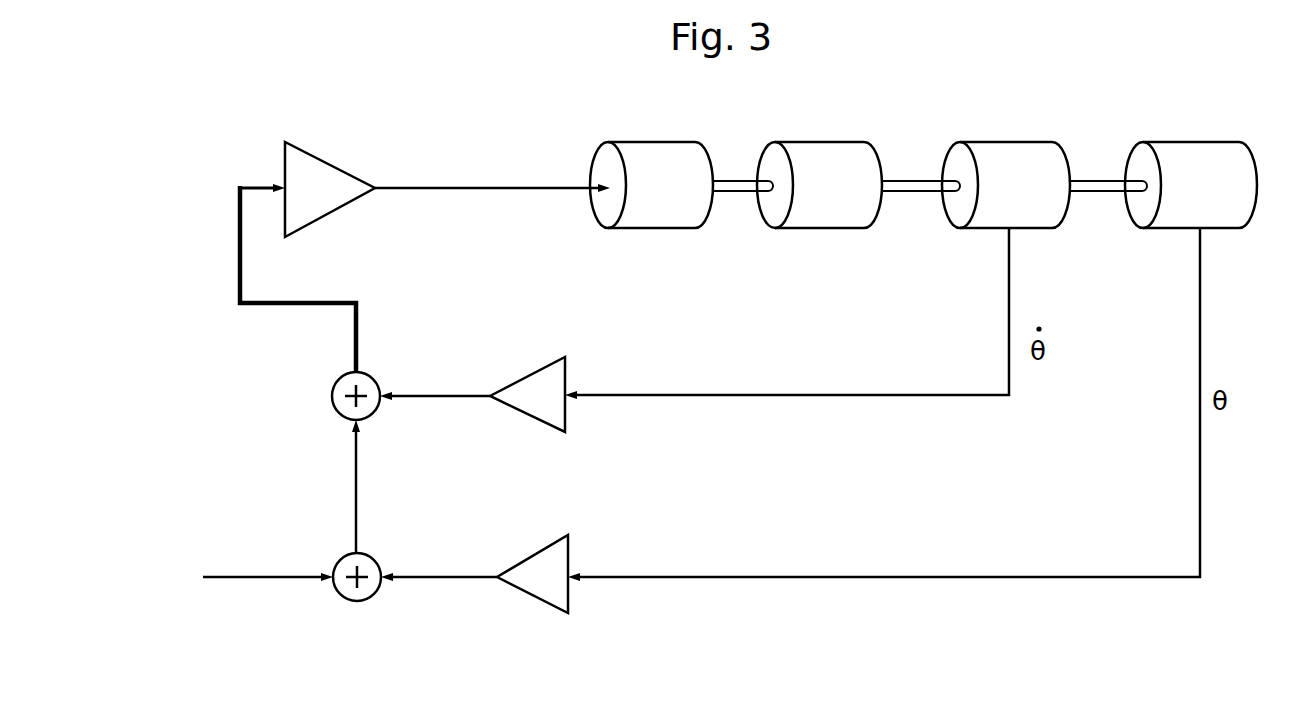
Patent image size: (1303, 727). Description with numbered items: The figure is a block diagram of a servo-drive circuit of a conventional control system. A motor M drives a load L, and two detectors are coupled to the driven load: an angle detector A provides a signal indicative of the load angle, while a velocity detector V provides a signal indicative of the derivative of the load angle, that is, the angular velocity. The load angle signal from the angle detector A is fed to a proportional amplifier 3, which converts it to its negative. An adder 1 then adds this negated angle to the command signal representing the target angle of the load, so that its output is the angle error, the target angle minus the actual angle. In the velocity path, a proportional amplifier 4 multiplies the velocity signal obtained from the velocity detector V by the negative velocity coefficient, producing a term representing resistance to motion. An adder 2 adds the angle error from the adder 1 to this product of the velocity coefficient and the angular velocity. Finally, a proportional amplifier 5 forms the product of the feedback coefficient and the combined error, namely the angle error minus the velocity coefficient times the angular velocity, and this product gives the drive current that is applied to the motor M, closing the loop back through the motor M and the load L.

The adder 1 is at (362, 600).
The adder 2 is at (335, 390).
The proportional amplifier 3 is at (544, 552).
The proportional amplifier 4 is at (535, 415).
The proportional amplifier 5 is at (313, 162).
The motor M is at (673, 150).
The load L is at (841, 150).
The velocity detector V is at (1022, 148).
The angle detector A is at (1200, 148).